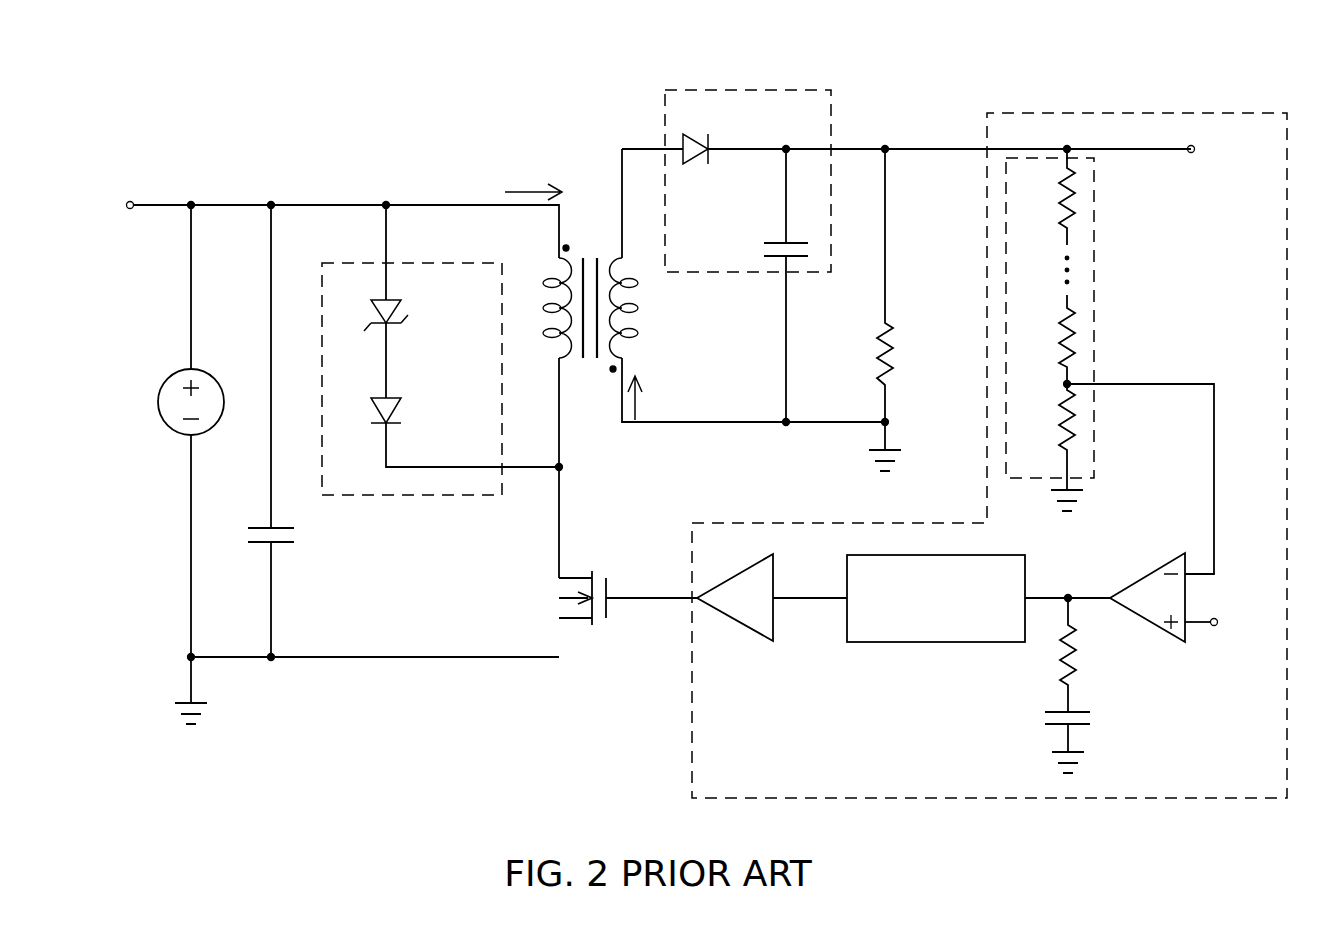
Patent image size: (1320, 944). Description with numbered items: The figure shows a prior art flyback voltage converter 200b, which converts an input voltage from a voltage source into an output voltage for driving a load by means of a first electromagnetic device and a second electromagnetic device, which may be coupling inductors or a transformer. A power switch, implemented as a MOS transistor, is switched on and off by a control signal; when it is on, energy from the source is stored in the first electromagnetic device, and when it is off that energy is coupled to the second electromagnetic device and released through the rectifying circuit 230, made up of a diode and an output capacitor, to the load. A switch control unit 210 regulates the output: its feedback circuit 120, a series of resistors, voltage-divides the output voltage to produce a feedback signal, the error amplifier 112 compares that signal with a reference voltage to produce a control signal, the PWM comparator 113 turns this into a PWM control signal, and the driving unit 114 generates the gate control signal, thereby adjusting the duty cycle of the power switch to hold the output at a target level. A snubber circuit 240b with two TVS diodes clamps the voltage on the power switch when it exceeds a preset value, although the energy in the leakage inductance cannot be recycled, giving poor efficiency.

The flyback voltage converter 200b is at (265, 128).
The snubber circuit 240b is at (447, 497).
The rectifying circuit 230 is at (735, 275).
The feedback circuit 120 is at (1094, 305).
The switch control unit 210 is at (692, 743).
The driving unit 114 is at (732, 624).
The PWM comparator 113 is at (935, 645).
The error amplifier 112 is at (1145, 627).